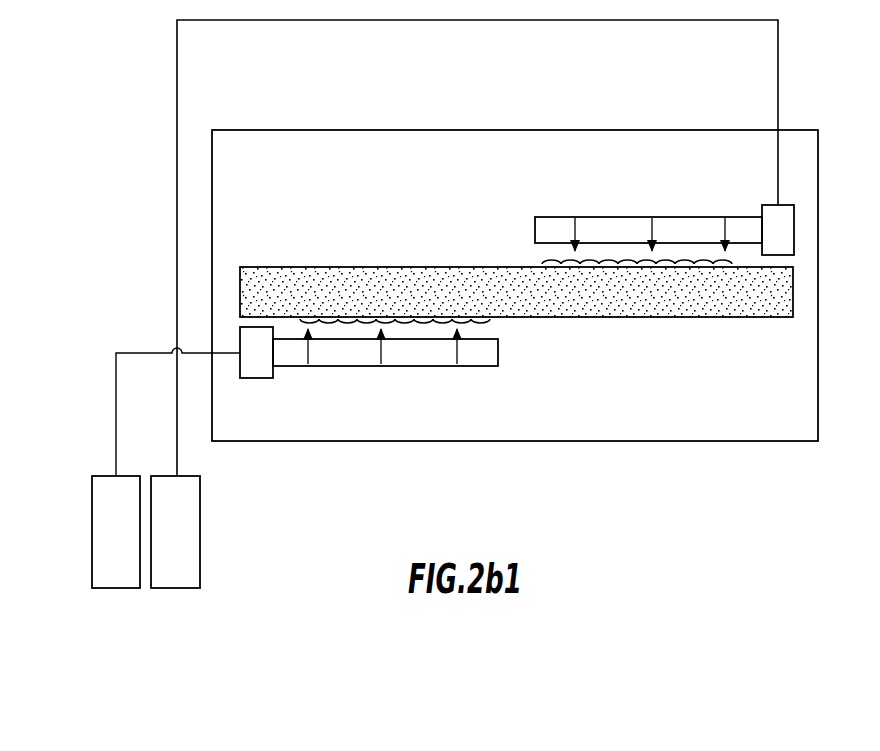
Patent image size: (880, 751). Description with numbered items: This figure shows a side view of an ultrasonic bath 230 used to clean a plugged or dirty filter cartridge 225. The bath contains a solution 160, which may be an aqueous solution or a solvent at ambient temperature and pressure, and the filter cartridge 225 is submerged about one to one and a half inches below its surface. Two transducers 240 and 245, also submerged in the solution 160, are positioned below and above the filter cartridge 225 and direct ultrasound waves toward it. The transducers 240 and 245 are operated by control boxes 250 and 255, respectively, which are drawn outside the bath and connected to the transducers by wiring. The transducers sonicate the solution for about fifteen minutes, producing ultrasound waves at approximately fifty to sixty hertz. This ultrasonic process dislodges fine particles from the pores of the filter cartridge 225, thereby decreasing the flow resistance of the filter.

The solution 160 is at (782, 412).
The filter cartridge 225 is at (383, 263).
The ultrasonic bath 230 is at (355, 120).
The transducer 240 is at (369, 368).
The transducer 245 is at (660, 215).
The control box 250 is at (95, 470).
The control box 255 is at (203, 533).